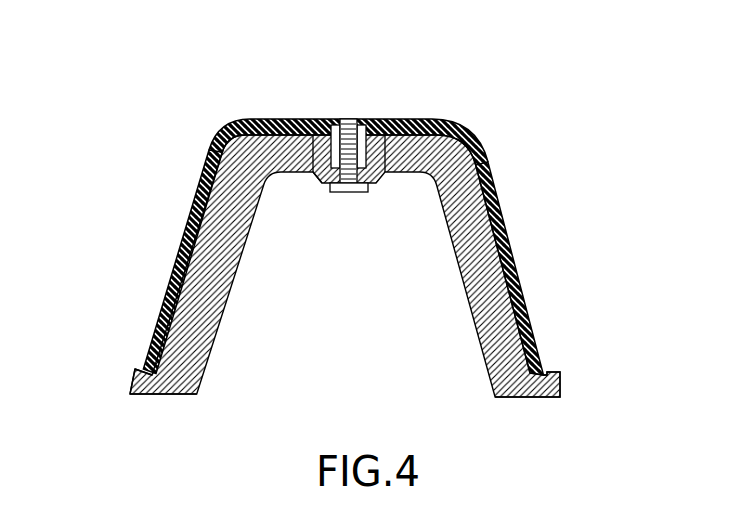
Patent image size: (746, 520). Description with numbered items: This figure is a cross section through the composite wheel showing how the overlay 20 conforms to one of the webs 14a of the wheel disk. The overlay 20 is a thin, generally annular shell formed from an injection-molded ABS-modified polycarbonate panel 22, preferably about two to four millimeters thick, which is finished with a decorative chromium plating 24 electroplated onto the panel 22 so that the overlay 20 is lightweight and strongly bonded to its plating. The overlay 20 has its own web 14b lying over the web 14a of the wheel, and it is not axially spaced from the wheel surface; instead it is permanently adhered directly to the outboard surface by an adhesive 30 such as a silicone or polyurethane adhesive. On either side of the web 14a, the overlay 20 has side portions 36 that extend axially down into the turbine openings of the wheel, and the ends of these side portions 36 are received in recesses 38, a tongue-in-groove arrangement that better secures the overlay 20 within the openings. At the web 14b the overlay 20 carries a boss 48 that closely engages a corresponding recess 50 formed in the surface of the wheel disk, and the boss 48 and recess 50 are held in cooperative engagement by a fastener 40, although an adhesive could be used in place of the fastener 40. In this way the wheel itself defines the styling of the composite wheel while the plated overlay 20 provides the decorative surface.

The web 14a is at (453, 238).
The web 14b is at (354, 88).
The overlay 20 is at (362, 209).
The panel 22 is at (395, 121).
The chromium plating 24 is at (437, 121).
The adhesive 30 is at (304, 119).
The side portion 36 is at (190, 216).
The recess 38 is at (140, 371).
The fastener 40 is at (347, 192).
The boss 48 is at (384, 171).
The recess 50 is at (303, 168).